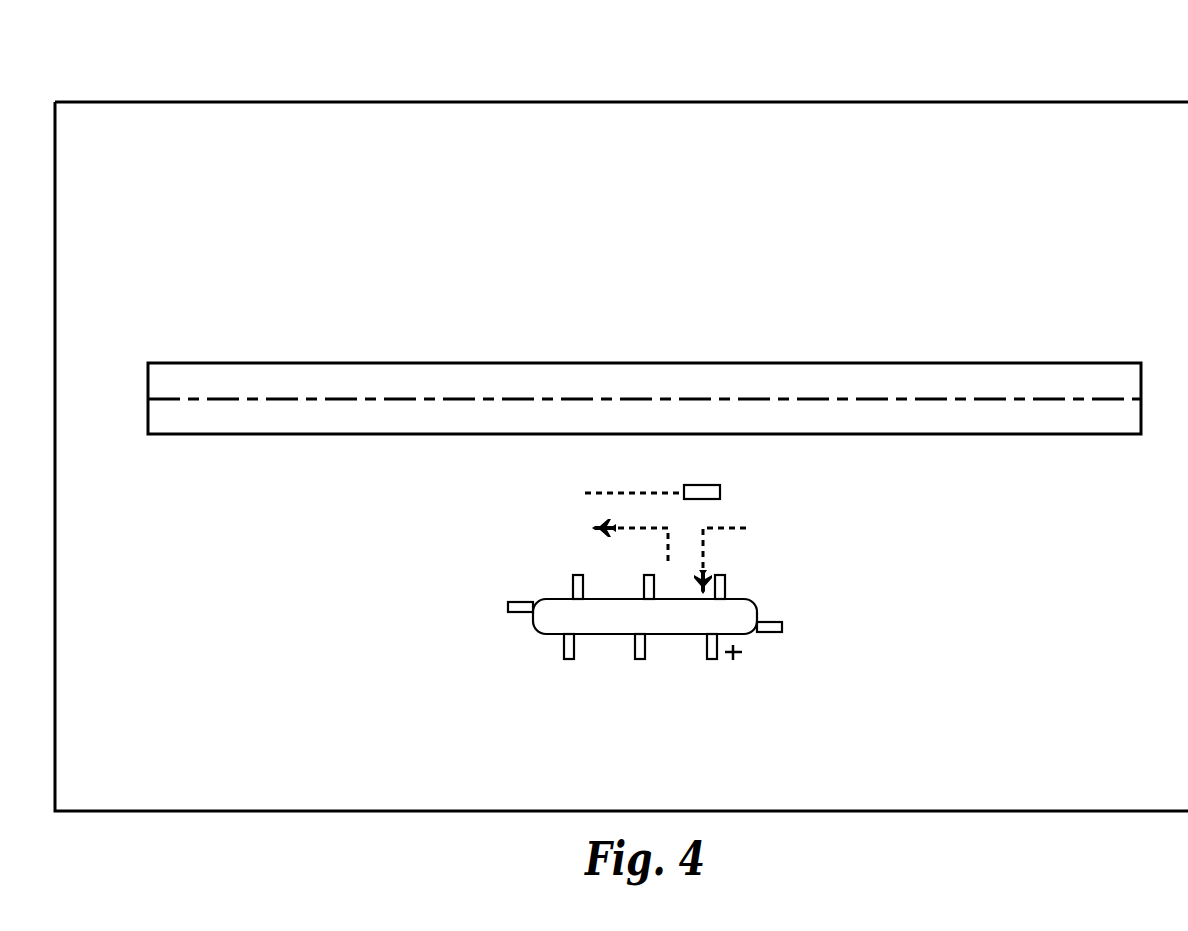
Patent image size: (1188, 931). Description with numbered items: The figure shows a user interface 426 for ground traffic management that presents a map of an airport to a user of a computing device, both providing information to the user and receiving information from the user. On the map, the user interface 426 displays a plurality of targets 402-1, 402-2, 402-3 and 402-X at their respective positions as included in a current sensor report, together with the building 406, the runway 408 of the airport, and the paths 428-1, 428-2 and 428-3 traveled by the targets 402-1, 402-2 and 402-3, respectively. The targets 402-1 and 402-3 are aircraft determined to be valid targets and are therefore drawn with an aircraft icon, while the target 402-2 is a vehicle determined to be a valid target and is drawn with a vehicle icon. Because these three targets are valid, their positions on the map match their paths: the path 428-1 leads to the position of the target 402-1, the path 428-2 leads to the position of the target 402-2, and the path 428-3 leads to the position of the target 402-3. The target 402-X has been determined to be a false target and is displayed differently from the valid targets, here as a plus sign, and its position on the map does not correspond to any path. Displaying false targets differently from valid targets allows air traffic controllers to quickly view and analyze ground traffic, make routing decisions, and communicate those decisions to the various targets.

The user interface 426 is at (84, 61).
The runway 408 is at (846, 369).
The building 406 is at (550, 631).
The target 402-1 is at (591, 529).
The target 402-2 is at (716, 493).
The target 402-3 is at (710, 576).
The false target 402-X is at (737, 658).
The path 428-1 is at (645, 531).
The path 428-2 is at (610, 492).
The path 428-3 is at (750, 528).